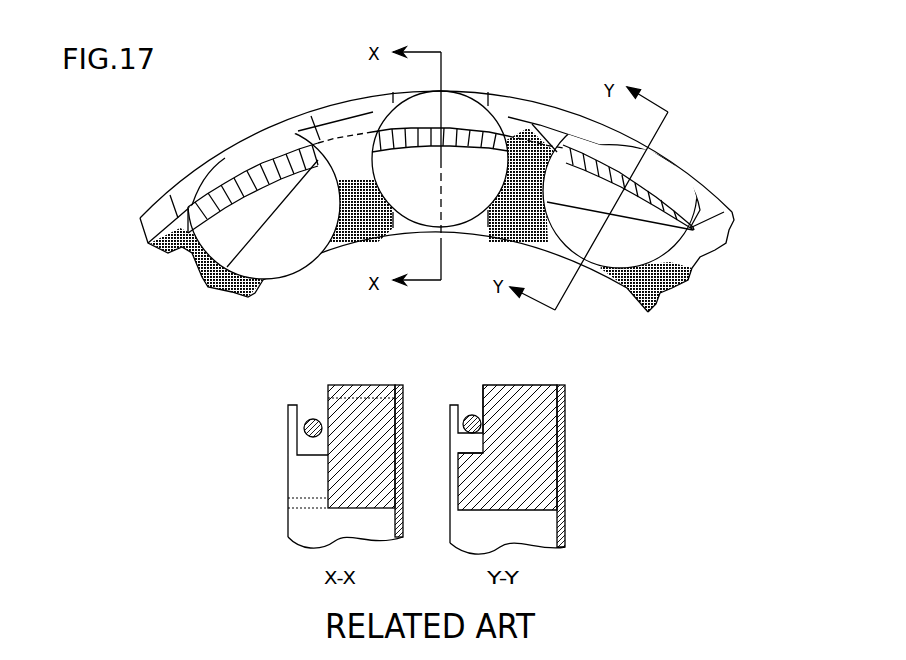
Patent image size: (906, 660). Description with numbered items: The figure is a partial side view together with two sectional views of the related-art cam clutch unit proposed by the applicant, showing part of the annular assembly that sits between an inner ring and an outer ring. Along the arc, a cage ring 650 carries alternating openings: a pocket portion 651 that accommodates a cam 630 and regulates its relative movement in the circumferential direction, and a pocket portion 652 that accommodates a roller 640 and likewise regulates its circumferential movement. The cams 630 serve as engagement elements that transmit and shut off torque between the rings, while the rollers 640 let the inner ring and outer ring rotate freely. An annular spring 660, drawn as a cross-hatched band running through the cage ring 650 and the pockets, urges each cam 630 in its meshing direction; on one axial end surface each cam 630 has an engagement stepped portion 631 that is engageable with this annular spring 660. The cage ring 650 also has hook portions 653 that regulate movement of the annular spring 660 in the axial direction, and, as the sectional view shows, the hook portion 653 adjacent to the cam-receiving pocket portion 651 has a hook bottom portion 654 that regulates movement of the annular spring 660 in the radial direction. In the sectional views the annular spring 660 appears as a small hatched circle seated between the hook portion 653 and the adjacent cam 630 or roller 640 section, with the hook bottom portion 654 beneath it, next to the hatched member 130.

The shaft 130 is at (523, 387).
The cam 630 is at (253, 155).
The engagement stepped portion 631 is at (248, 198).
The roller 640 is at (417, 117).
The cage ring 650 is at (563, 107).
The pocket portion 651 is at (297, 124).
The pocket portion 652 is at (480, 93).
The hook portion 653 is at (288, 422).
The hook bottom portion 654 is at (528, 127).
The annular spring 660 is at (660, 187).